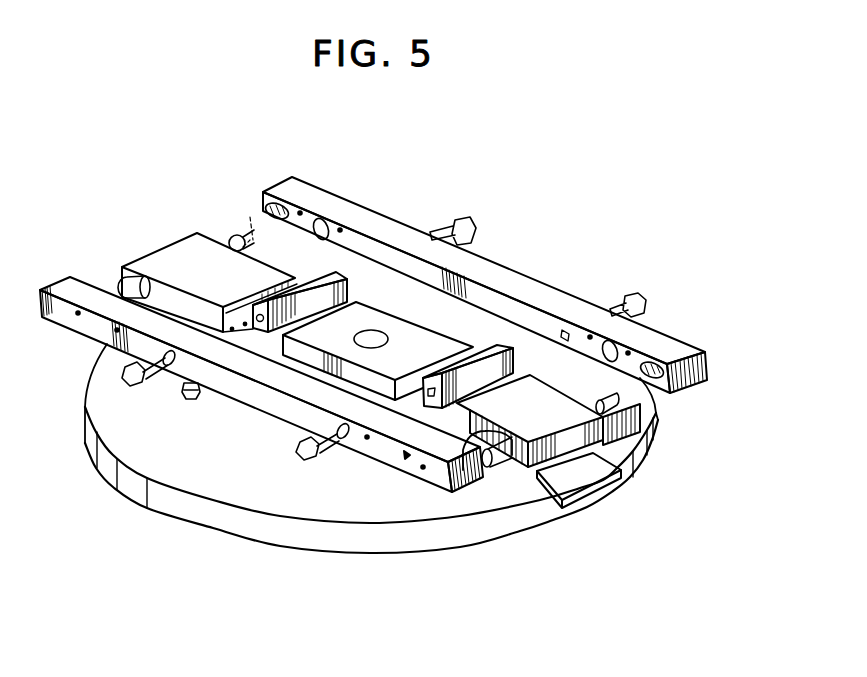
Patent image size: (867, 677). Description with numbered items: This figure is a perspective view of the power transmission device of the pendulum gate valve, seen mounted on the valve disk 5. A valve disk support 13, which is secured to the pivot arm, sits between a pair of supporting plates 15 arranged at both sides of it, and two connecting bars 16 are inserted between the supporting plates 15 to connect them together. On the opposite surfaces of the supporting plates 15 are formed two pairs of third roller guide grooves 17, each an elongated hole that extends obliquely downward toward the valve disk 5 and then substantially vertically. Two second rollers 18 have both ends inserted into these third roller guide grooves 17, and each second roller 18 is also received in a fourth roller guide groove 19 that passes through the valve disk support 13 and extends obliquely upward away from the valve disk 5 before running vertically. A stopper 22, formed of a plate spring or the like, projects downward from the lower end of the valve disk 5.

The valve disk 5 is at (317, 537).
The valve disk support 13 is at (390, 327).
The supporting plate 15 is at (667, 343).
The connecting bar 16 is at (320, 280).
The third roller guide groove 17 is at (268, 210).
The second roller 18 is at (127, 290).
The fourth roller guide groove 19 is at (480, 432).
The stopper 22 is at (588, 487).